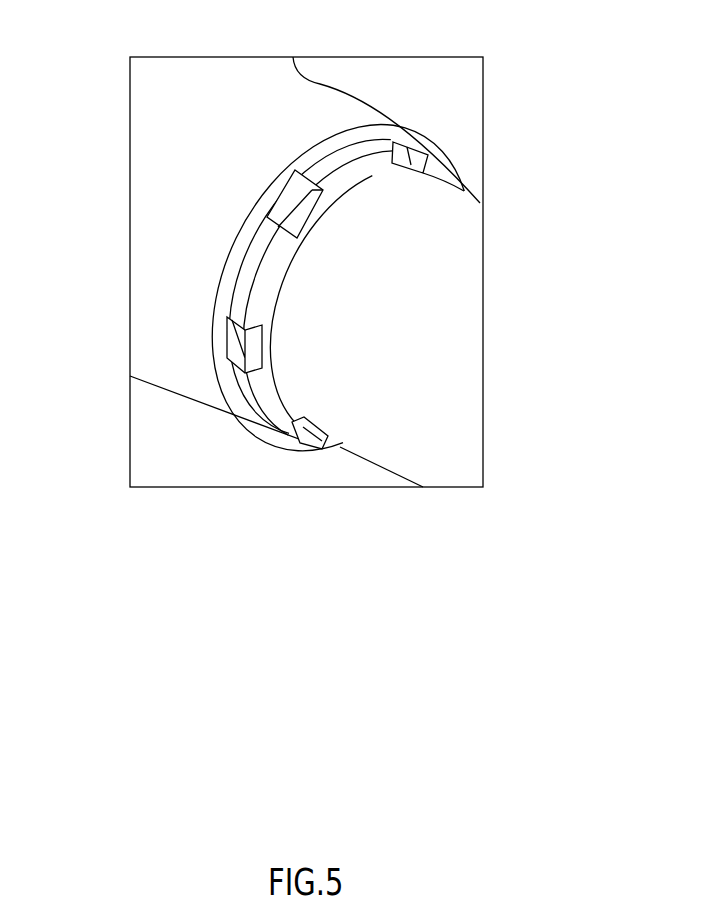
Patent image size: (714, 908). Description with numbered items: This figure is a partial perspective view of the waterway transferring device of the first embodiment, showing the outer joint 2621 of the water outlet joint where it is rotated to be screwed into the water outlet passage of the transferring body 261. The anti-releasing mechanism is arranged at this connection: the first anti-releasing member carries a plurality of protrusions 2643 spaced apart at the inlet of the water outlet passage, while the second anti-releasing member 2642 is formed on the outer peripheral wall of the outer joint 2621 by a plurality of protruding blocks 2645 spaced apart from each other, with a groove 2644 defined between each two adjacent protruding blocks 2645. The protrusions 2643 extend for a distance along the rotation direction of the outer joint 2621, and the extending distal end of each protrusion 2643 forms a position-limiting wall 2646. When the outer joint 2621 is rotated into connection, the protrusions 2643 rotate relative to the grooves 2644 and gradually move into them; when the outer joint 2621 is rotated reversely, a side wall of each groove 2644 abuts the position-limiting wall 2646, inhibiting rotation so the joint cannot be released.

The transferring body 261 is at (327, 112).
The outer joint 2621 is at (420, 357).
The second anti-releasing member 2642 is at (360, 173).
The protrusions 2643 is at (290, 206).
The grooves 2644 is at (297, 220).
The protruding blocks 2645 is at (253, 290).
The position-limiting wall 2646 is at (295, 170).